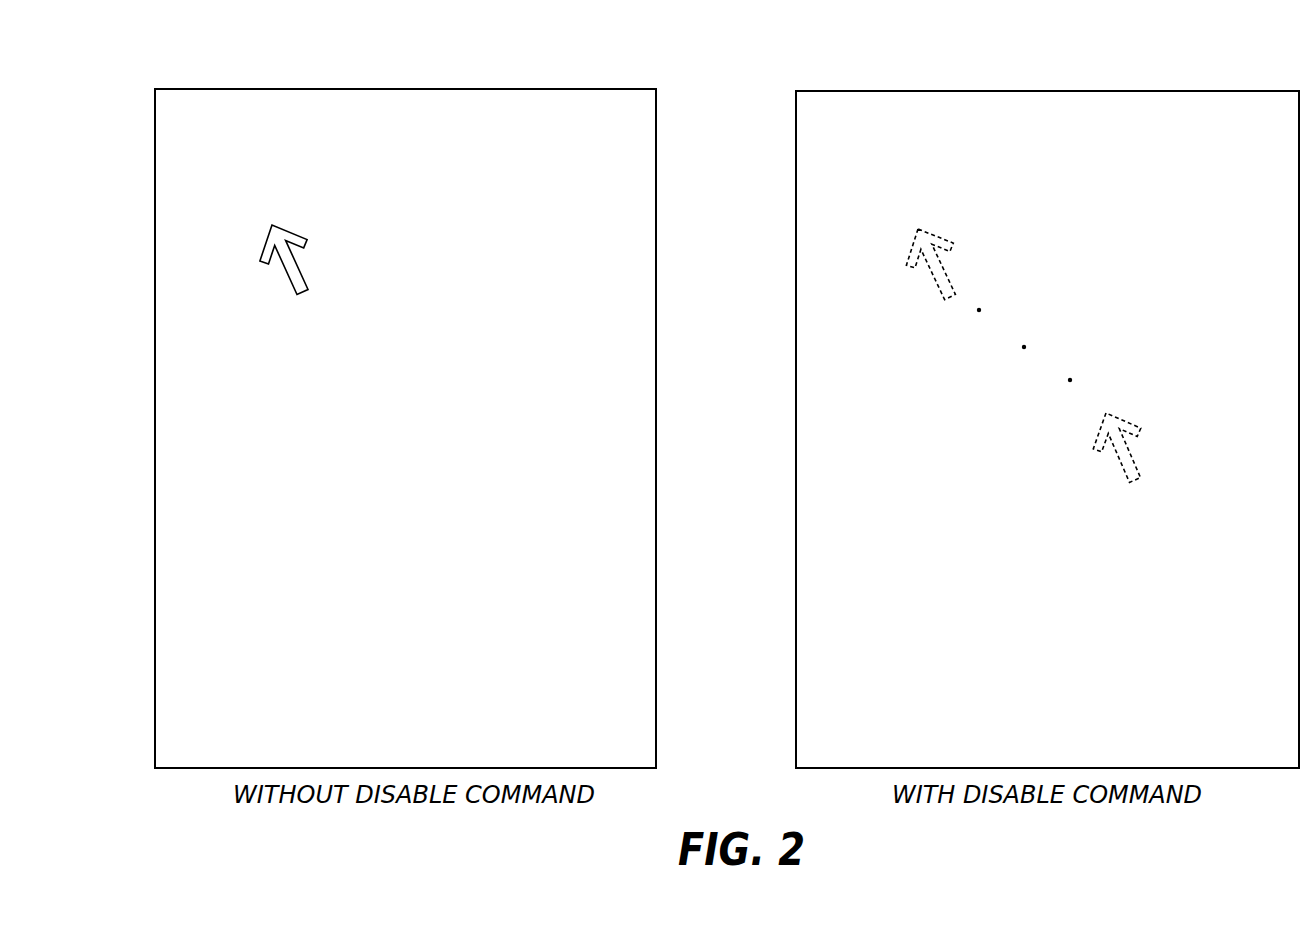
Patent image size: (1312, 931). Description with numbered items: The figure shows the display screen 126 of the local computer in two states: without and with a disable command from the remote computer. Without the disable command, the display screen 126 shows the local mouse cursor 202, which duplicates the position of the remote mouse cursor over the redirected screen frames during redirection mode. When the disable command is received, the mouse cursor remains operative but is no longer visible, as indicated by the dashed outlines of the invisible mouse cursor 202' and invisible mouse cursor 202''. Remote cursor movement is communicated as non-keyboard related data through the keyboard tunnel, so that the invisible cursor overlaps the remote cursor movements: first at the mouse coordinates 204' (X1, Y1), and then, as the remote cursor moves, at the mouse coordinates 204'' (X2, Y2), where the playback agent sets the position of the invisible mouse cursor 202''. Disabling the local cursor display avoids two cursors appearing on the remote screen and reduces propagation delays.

The display screen 126 is at (373, 42).
The local mouse cursor 202 is at (188, 286).
The invisible mouse cursor 202' is at (823, 288).
The invisible mouse cursor 202'' is at (1034, 491).
The mouse coordinates (X1, Y1) 204' is at (1040, 183).
The mouse coordinates (X2, Y2) 204'' is at (1223, 457).